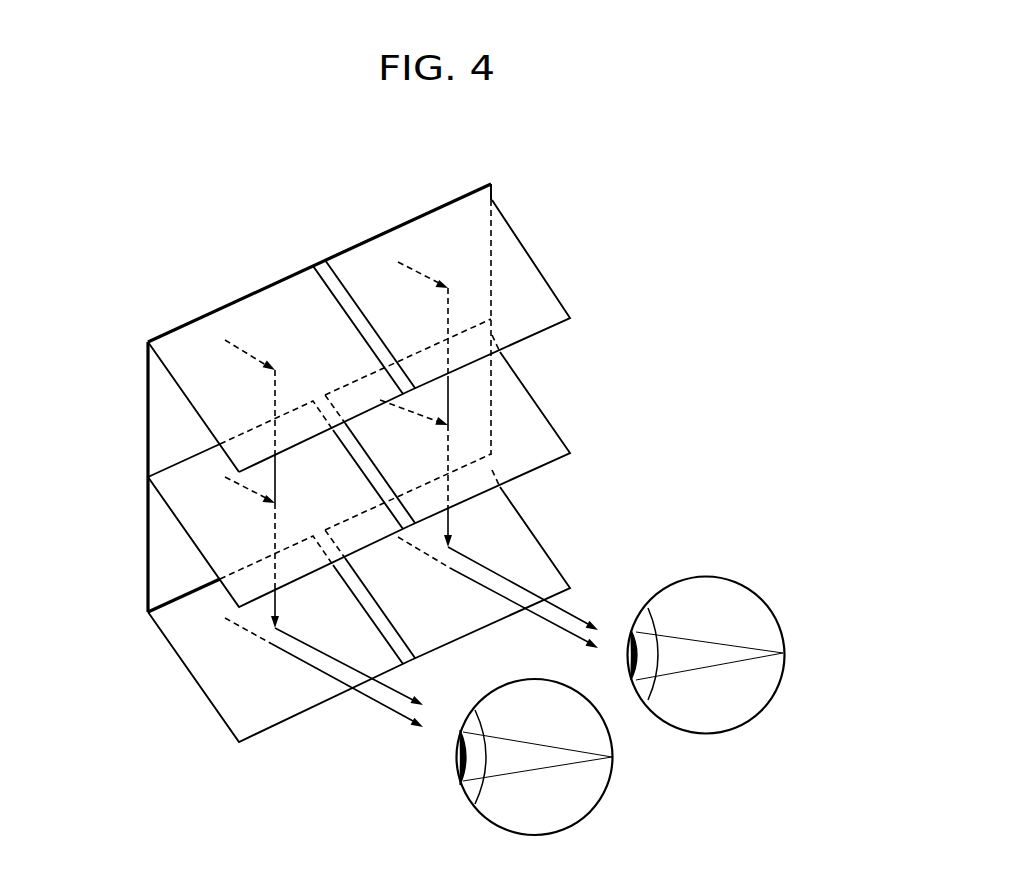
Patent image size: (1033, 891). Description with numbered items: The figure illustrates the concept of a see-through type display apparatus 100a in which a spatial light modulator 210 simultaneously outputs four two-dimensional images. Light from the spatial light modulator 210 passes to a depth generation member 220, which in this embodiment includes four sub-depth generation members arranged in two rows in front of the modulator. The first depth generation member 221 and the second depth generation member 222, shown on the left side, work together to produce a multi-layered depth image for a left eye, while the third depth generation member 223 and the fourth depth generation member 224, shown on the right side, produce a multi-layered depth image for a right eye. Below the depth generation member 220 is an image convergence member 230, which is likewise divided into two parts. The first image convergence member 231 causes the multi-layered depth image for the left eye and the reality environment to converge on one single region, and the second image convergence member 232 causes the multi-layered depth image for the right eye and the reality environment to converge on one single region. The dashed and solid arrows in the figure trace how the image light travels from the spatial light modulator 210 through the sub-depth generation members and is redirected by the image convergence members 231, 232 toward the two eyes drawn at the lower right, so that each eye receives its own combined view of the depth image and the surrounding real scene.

The see-through type display apparatus 100a is at (640, 172).
The spatial light modulator 210 is at (160, 407).
The depth generation member 220 is at (640, 253).
The first depth generation member 221 is at (220, 412).
The second depth generation member 222 is at (210, 522).
The third depth generation member 223 is at (547, 303).
The fourth depth generation member 224 is at (547, 437).
The image convergence member 230 is at (606, 529).
The first image convergence member 231 is at (218, 683).
The second image convergence member 232 is at (520, 543).